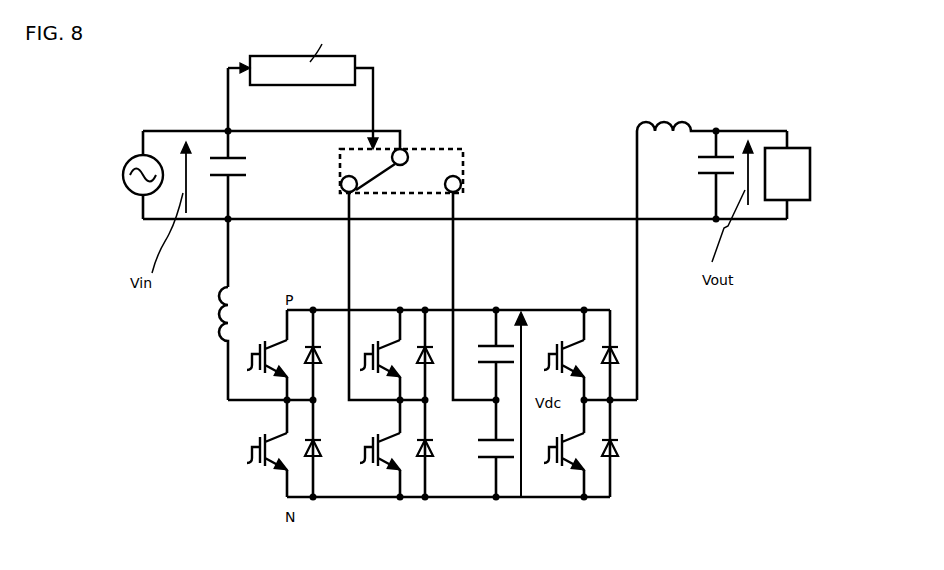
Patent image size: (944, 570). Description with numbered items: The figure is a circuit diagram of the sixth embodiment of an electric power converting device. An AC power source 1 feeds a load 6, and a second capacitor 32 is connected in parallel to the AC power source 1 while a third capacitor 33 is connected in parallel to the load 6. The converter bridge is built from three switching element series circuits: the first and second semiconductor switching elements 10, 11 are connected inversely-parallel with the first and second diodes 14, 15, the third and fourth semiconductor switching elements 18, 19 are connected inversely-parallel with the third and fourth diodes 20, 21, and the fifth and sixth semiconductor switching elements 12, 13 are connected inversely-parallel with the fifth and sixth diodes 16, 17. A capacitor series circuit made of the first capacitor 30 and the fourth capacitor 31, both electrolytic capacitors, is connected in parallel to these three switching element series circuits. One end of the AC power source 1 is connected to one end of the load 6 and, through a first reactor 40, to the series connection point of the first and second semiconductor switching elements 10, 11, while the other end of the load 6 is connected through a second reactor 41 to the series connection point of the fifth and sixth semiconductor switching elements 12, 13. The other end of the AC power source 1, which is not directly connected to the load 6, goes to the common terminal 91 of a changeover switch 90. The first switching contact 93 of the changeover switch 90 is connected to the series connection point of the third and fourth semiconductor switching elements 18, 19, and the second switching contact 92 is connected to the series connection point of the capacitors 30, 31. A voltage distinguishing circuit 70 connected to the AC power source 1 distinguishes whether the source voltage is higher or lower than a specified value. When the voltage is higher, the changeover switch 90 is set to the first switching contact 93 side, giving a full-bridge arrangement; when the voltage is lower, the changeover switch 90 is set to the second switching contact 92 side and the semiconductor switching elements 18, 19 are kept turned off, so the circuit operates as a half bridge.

The AC power source 1 is at (119, 165).
The load 6 is at (806, 200).
The first semiconductor switching element 10 is at (282, 336).
The second semiconductor switching element 11 is at (279, 468).
The fifth semiconductor switching element 12 is at (568, 337).
The sixth semiconductor switching element 13 is at (567, 473).
The first diode 14 is at (320, 343).
The second diode 15 is at (331, 466).
The fifth diode 16 is at (620, 343).
The sixth diode 17 is at (627, 470).
The third semiconductor switching element 18 is at (388, 331).
The fourth semiconductor switching element 19 is at (383, 468).
The third diode 20 is at (429, 342).
The fourth diode 21 is at (432, 468).
The first capacitor 30 is at (490, 343).
The fourth capacitor 31 is at (488, 470).
The second capacitor 32 is at (254, 170).
The third capacitor 33 is at (694, 167).
The first reactor 40 is at (206, 313).
The second reactor 41 is at (636, 132).
The voltage distinguishing circuit 70 is at (240, 66).
The changeover switch 90 is at (460, 148).
The common terminal 91 is at (406, 148).
The second switching contact 92 is at (462, 176).
The first switching contact 93 is at (341, 178).